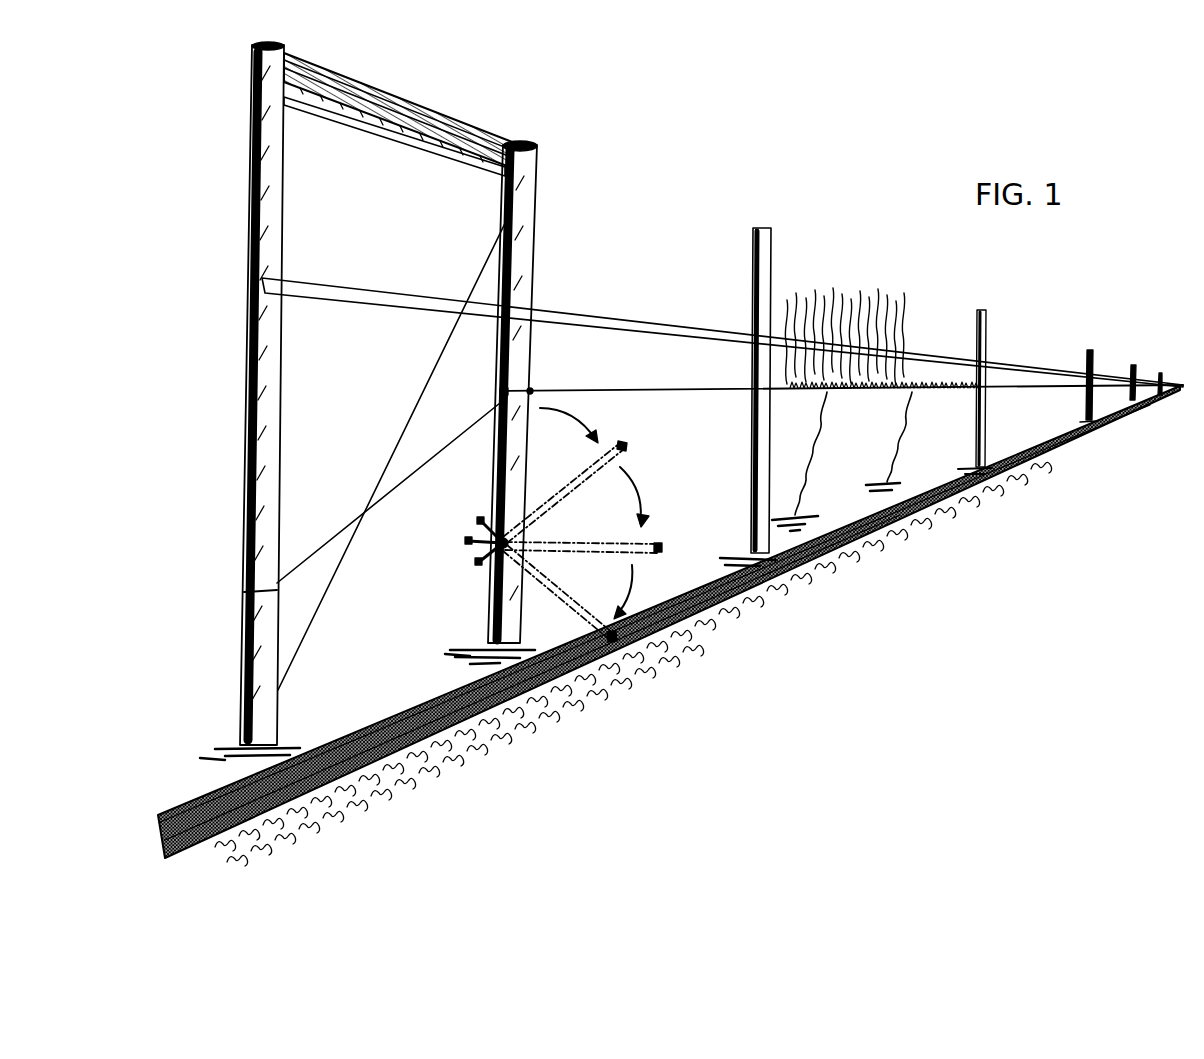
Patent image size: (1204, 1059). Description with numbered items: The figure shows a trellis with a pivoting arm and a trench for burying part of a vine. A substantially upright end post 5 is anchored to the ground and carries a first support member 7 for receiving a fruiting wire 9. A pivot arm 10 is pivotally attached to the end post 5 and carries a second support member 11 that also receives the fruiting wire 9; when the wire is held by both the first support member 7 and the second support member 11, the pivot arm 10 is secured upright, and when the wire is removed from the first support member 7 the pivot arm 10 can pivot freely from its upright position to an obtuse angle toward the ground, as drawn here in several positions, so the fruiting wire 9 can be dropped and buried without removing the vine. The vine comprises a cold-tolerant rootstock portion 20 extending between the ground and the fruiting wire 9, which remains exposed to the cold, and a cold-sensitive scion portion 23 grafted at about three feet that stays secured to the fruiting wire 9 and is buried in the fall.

The end post 5 is at (538, 262).
The first support member 7 is at (530, 390).
The fruiting wire 9 is at (638, 392).
The pivot arm 10 is at (618, 438).
The second support member 11 is at (505, 393).
The cold-tolerant rootstock portion 20 is at (808, 470).
The cold-sensitive scion portion 23 is at (863, 390).